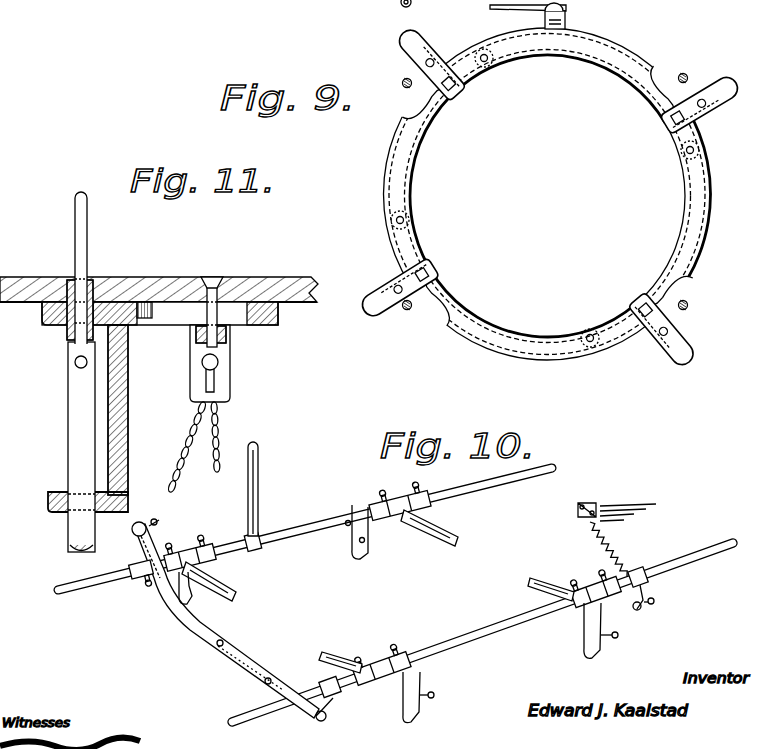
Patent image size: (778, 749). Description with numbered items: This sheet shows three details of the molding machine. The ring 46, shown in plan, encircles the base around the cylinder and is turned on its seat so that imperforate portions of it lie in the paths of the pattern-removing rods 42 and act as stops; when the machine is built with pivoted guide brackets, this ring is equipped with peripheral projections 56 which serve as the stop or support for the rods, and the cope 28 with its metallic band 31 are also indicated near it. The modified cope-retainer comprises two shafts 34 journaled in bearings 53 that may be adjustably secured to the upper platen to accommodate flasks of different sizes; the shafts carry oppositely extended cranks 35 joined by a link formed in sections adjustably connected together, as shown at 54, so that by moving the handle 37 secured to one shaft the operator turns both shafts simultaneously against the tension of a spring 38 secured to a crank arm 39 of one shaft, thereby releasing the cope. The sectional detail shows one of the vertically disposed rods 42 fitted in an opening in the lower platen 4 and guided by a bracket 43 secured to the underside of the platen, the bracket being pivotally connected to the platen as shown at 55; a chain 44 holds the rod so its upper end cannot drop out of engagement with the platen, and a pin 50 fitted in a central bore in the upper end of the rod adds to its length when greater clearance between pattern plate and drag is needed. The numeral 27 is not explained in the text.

In FIG. 11, the platen 4 is at (272, 283).
In FIG. 9, the pivot 27 is at (402, 5).
In FIG. 9, the cope 28 is at (322, 0).
In FIG. 9, the metallic band 31 is at (345, 0).
In FIG. 10, the shafts 34 is at (314, 528).
In FIG. 10, the cranks 35 is at (140, 582).
In FIG. 10, the handle 37 is at (257, 472).
In FIG. 10, the spring 38 is at (618, 559).
In FIG. 10, the crank arm 39 is at (652, 592).
In FIG. 9, the rods 42 is at (427, 63).
In FIG. 11, the rods 42 is at (72, 400).
In FIG. 11, the brackets 43 is at (120, 448).
In FIG. 11, the chains 44 is at (216, 430).
In FIG. 9, the ring 46 is at (528, 350).
In FIG. 11, the pins 50 is at (85, 247).
In FIG. 10, the bearings 53 is at (186, 552).
In FIG. 10, the sectional link 54 is at (256, 662).
In FIG. 11, the pivotal connection of guide bracket 55 is at (213, 280).
In FIG. 9, the peripheral projections 56 is at (408, 40).